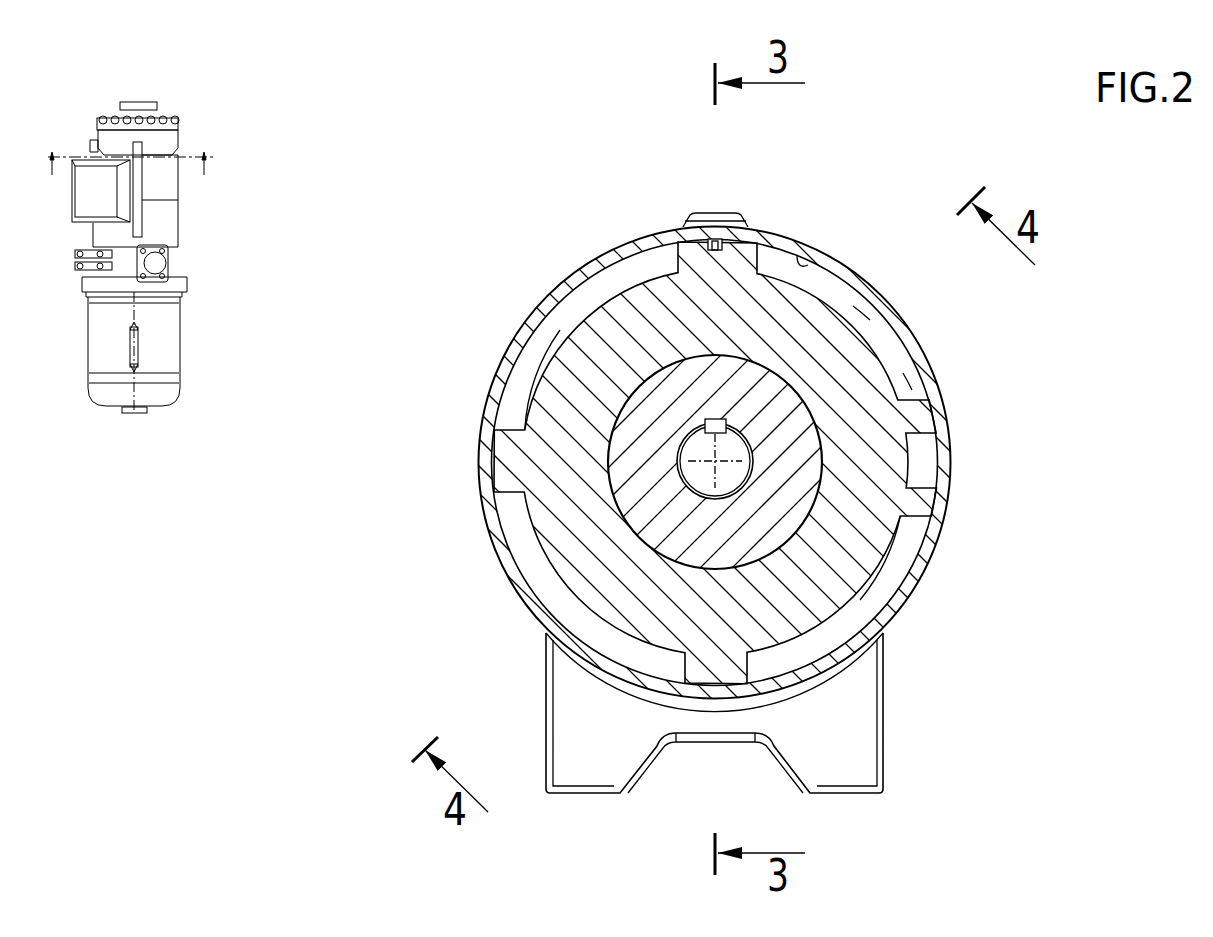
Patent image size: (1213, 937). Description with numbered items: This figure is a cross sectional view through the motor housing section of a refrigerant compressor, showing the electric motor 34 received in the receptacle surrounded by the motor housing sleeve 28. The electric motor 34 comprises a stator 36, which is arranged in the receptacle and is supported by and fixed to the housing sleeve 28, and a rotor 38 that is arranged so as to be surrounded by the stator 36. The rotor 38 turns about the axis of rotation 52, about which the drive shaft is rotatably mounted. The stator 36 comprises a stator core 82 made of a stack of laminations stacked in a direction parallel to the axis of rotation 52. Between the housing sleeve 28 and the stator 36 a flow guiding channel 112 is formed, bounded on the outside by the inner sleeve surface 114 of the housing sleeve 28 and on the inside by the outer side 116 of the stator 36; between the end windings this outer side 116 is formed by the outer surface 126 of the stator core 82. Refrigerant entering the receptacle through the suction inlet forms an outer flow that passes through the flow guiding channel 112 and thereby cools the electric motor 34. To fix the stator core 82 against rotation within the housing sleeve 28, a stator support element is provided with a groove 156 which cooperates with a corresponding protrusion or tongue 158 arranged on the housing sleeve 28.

The motor housing sleeve 28 is at (946, 453).
The flow guiding channel 112 is at (853, 306).
The inner sleeve surface 114 is at (797, 255).
The outer side of the stator 116 is at (903, 373).
The stator 36 is at (840, 356).
The electric motor 34 is at (562, 520).
The outer surface of the stator core 126 is at (843, 562).
The rotor 38 is at (772, 500).
The axis of rotation 52 is at (712, 458).
The groove 156 is at (707, 239).
The protrusion or tongue 158 is at (722, 239).
The stator core 82 is at (825, 554).